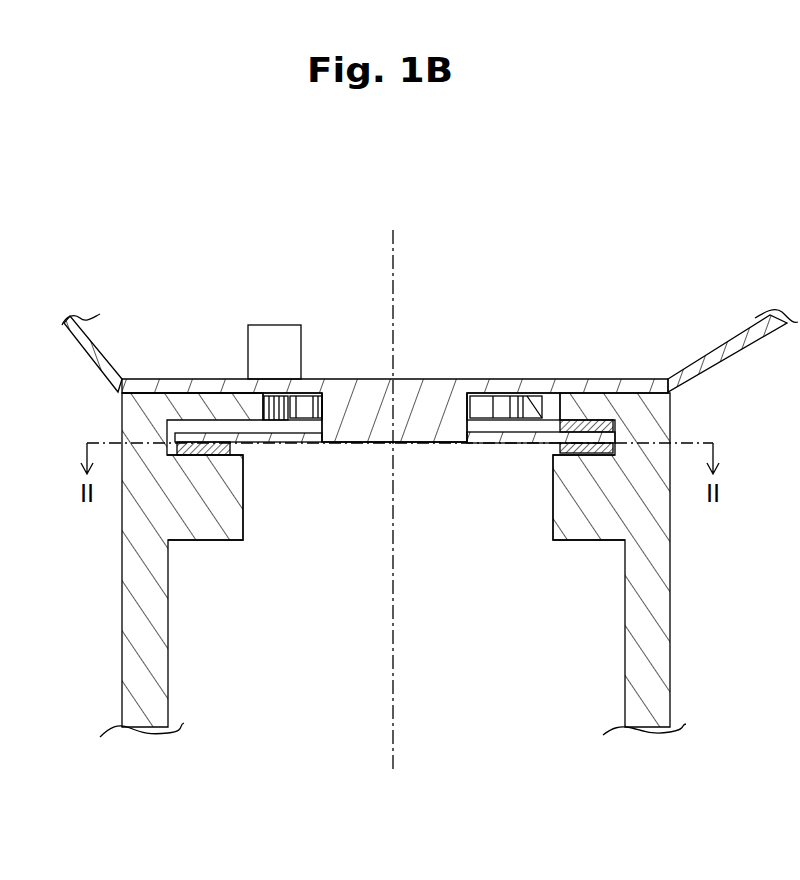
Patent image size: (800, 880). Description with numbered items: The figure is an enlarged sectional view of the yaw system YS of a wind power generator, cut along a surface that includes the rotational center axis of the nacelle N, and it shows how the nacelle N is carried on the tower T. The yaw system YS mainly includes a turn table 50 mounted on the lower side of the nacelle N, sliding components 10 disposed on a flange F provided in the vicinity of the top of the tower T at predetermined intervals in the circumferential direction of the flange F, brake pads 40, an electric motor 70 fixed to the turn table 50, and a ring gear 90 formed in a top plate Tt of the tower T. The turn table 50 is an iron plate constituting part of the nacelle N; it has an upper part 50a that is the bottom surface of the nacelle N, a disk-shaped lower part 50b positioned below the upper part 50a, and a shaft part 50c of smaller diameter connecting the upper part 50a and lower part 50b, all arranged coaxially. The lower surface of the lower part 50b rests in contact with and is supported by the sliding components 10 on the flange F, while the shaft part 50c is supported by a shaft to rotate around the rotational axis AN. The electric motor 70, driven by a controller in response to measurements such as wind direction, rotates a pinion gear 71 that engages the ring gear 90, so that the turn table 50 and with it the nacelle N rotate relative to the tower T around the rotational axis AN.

The yaw system YS is at (200, 267).
The rotational axis AN is at (393, 249).
The nacelle N is at (708, 362).
The tower T is at (657, 622).
The top plate Tt is at (132, 417).
The flange F is at (202, 525).
The turn table 50 is at (395, 451).
The upper part 50a is at (606, 386).
The lower part 50b is at (277, 437).
The shaft part 50c is at (350, 430).
The electric motor 70 is at (270, 343).
The pinion gear 71 is at (280, 408).
The ring gear 90 is at (500, 410).
The sliding component 10 is at (203, 457).
The brake pad 40 is at (587, 449).